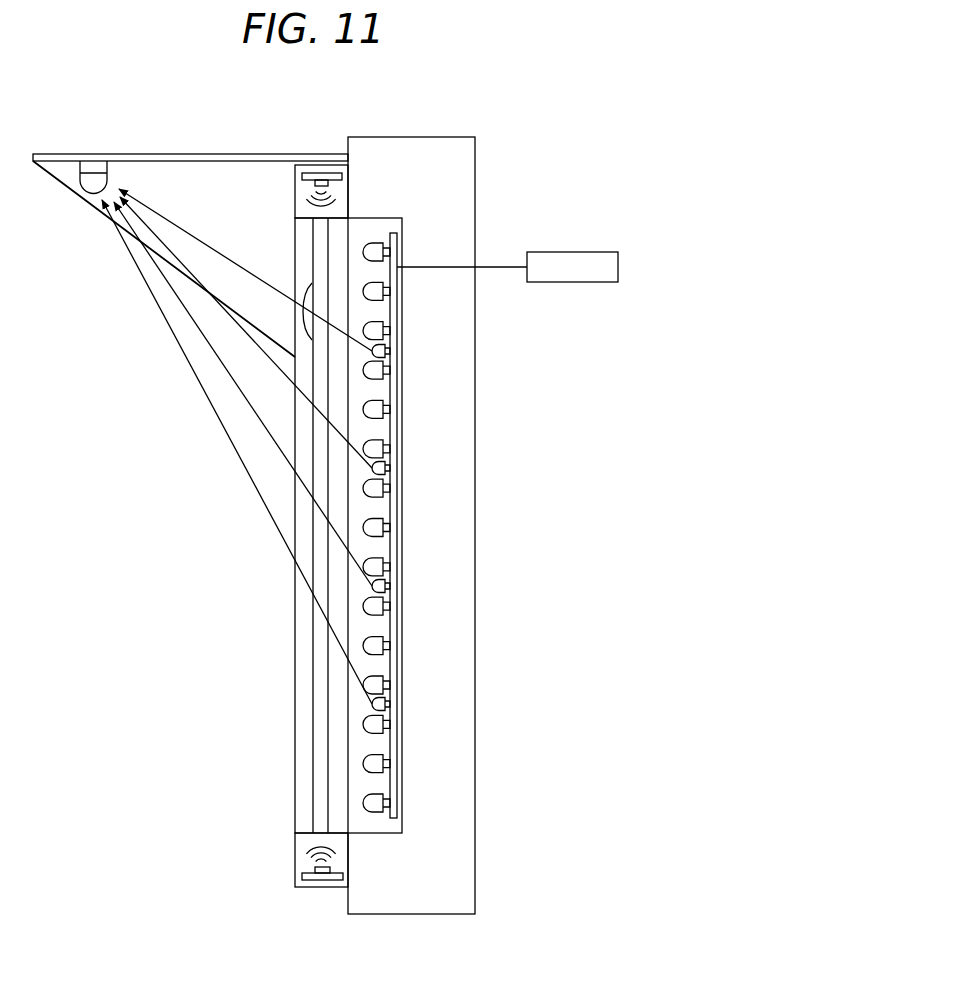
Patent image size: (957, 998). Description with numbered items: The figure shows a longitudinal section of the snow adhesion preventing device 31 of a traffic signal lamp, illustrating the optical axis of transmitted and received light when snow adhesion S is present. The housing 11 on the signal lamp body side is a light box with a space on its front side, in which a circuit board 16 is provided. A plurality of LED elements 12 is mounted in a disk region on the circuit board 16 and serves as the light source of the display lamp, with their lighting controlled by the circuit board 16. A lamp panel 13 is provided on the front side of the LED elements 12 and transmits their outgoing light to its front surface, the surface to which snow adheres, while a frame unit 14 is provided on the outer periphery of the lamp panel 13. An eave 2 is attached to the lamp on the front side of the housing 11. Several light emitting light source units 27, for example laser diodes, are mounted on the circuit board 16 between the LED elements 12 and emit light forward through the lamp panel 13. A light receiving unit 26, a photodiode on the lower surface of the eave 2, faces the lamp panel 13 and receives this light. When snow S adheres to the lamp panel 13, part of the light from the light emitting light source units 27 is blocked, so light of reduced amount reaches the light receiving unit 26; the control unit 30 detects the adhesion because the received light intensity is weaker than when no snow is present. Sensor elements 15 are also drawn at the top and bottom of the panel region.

The eave 2 is at (158, 154).
The housing 11 is at (465, 405).
The LED elements 12 is at (371, 250).
The lamp panel 13 is at (318, 249).
The frame unit 14 is at (295, 778).
The ultrasonic sensors 15 is at (323, 172).
The circuit board 16 is at (401, 238).
The light receiving unit 26 is at (84, 180).
The light emitting light source units 27 is at (390, 353).
The control unit 30 is at (563, 252).
The snow adhesion preventing device 31 is at (265, 668).
The snow adhesion S is at (298, 305).